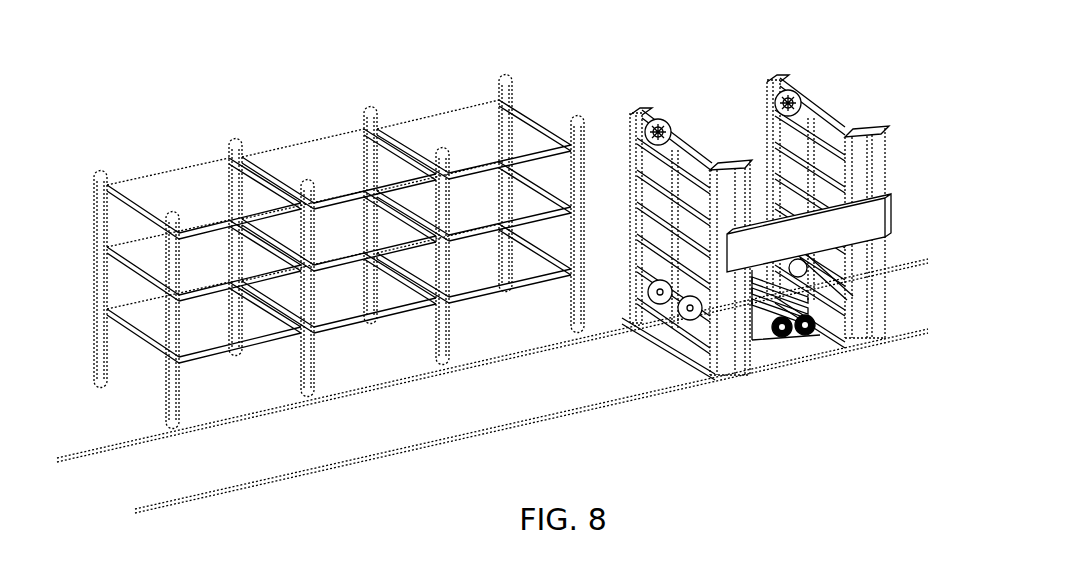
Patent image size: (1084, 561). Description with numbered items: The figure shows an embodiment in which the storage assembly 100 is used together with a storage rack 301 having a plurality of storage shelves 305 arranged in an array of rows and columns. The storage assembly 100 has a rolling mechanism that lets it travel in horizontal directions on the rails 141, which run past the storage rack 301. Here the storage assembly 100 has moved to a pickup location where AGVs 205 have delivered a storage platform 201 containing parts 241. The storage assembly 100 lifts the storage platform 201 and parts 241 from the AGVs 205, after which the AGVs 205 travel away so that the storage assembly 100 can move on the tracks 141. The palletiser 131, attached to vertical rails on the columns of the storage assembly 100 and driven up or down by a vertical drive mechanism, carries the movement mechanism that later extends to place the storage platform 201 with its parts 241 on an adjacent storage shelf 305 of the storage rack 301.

The storage assembly 100 is at (746, 82).
The palletiser 131 is at (873, 223).
The rails 141 is at (263, 413).
The storage platform 201 is at (825, 305).
The AGVs 205 is at (785, 337).
The parts 241 is at (770, 308).
The storage rack 301 is at (182, 182).
The storage shelves 305 is at (510, 120).